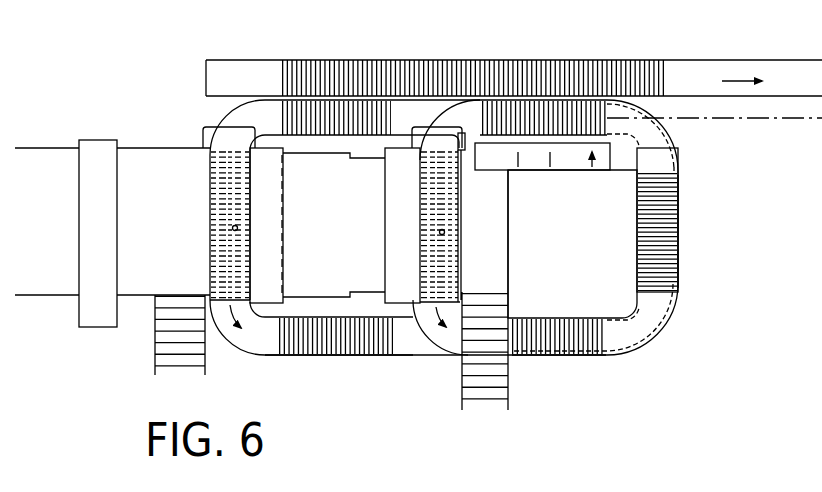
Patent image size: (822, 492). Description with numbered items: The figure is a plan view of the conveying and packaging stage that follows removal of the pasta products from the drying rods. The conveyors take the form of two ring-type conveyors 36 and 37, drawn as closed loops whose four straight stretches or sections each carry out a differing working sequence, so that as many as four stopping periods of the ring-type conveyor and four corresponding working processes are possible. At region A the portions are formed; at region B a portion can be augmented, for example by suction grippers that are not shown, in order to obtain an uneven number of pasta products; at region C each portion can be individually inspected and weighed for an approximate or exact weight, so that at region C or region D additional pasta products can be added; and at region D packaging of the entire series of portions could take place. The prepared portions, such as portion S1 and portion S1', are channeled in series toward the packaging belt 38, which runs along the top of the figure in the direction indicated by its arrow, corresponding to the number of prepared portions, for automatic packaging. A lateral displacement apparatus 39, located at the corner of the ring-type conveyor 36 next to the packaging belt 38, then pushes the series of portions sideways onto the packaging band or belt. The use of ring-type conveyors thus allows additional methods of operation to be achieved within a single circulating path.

The ring-type conveyor 36 is at (680, 212).
The ring-type conveyor 37 is at (291, 355).
The packaging belt 38 is at (703, 70).
The lateral displacement apparatus 39 is at (637, 147).
The region A is at (461, 240).
The region B is at (548, 318).
The region C is at (633, 207).
The region D is at (577, 143).
The prepared portion S1 is at (559, 391).
The prepared portion S1' is at (702, 234).